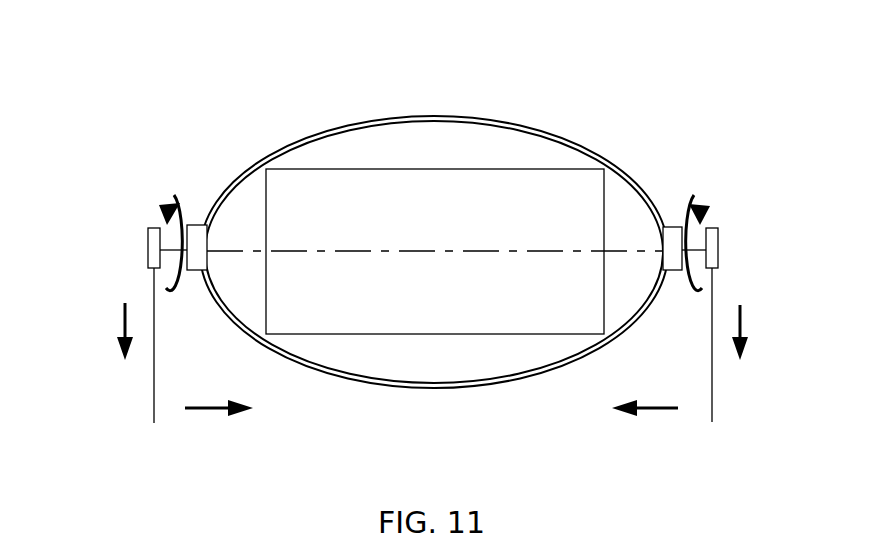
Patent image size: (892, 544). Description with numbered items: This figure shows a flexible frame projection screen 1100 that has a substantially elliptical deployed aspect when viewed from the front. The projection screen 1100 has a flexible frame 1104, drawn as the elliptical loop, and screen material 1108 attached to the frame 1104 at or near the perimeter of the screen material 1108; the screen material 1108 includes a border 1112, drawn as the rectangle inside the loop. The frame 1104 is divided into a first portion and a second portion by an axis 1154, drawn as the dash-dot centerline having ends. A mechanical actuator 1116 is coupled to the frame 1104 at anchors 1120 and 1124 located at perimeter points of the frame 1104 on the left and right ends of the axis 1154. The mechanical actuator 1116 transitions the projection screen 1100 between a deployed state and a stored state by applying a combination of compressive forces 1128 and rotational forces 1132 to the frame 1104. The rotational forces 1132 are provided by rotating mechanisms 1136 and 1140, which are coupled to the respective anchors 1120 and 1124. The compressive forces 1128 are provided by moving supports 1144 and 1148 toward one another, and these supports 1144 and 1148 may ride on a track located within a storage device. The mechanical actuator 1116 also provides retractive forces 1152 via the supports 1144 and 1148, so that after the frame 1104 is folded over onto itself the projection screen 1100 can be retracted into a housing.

The projection screen 1100 is at (200, 43).
The flexible frame 1104 is at (425, 388).
The screen material 1108 is at (432, 135).
The border 1112 is at (422, 333).
The mechanical actuator 1116 is at (125, 192).
The anchor 1120 is at (193, 225).
The anchor 1124 is at (673, 226).
The compressive forces 1128 is at (200, 410).
The rotational forces 1132 is at (173, 192).
The rotating mechanism 1136 is at (147, 247).
The rotating mechanism 1140 is at (718, 247).
The support 1144 is at (153, 390).
The support 1148 is at (713, 390).
The retractive forces 1152 is at (124, 322).
The axis 1154 is at (472, 250).